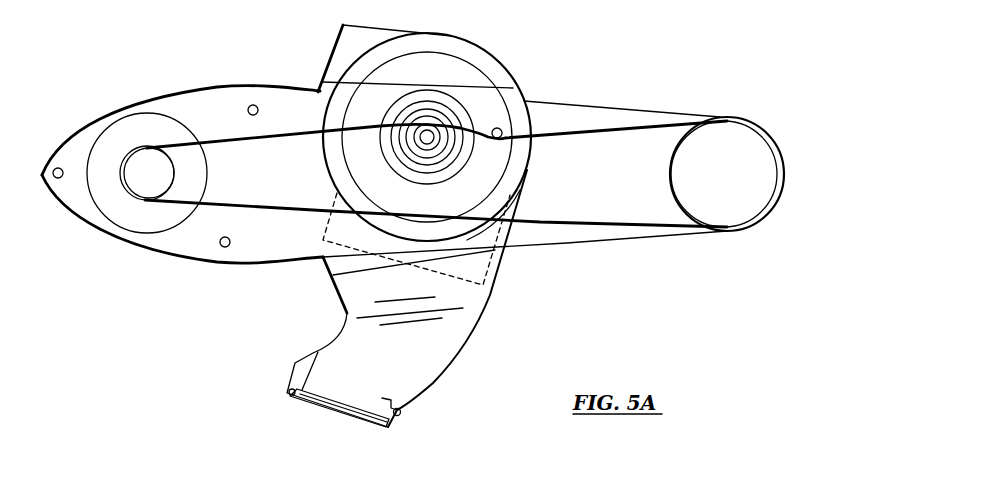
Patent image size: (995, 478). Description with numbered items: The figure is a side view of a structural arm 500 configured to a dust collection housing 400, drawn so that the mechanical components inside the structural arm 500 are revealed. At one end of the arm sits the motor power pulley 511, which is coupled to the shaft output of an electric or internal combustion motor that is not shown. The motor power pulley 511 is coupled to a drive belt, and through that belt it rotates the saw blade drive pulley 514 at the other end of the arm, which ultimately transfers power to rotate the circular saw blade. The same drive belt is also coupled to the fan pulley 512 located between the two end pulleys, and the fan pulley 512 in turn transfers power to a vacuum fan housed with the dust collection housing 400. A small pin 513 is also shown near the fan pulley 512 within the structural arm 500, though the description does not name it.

The dust collection housing 400 is at (467, 347).
The structural arm 500 is at (282, 262).
The motor power pulley 511 is at (137, 155).
The fan pulley 512 is at (410, 128).
The idler pin 513 is at (503, 127).
The saw blade drive pulley 514 is at (773, 193).